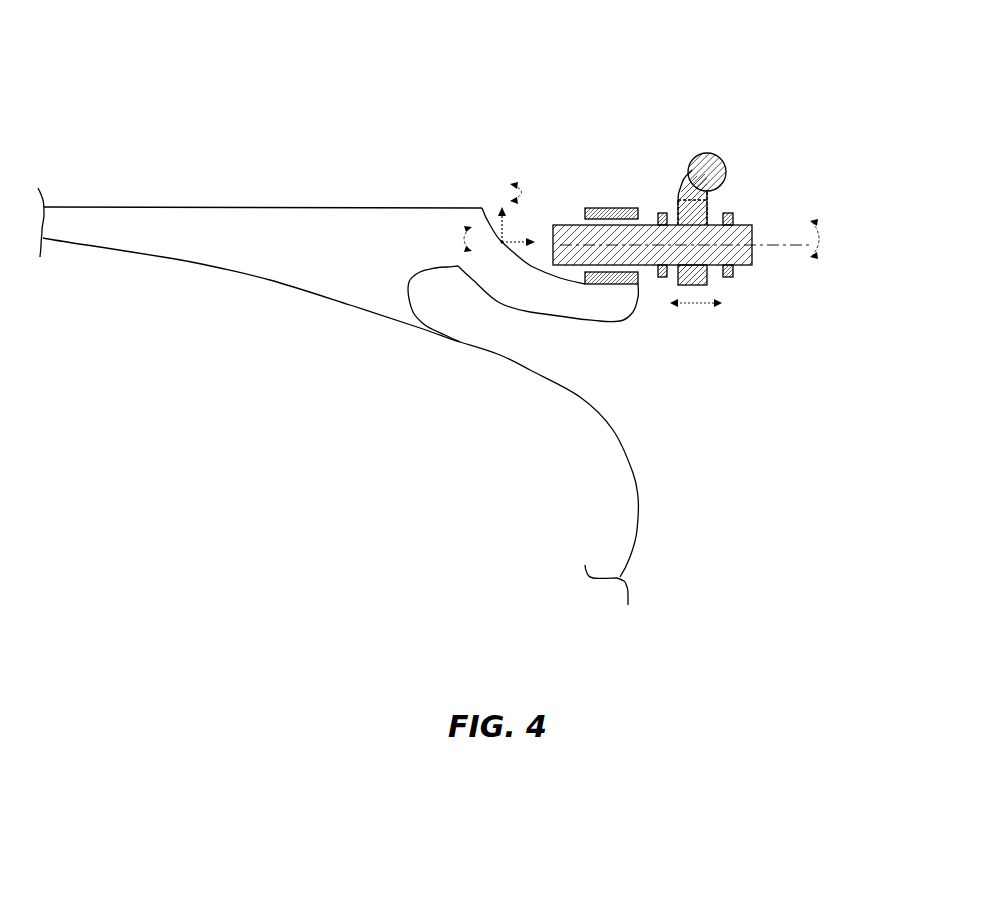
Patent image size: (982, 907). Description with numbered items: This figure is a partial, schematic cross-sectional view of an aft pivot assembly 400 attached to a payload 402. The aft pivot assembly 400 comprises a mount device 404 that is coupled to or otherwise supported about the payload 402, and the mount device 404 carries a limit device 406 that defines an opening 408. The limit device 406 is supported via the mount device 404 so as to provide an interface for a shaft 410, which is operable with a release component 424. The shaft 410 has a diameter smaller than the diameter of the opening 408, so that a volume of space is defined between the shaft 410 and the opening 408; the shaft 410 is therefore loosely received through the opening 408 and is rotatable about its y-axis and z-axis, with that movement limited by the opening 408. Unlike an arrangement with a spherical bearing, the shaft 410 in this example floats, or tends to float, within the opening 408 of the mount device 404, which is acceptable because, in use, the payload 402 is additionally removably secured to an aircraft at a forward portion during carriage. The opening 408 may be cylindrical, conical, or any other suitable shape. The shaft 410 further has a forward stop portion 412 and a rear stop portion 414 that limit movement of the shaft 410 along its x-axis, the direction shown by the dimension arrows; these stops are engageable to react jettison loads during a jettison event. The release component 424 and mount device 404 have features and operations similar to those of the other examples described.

The aft pivot assembly 400 is at (376, 55).
The payload 402 is at (638, 493).
The mount device 404 is at (298, 225).
The limit device 406 is at (600, 205).
The opening 408 is at (571, 217).
The shaft 410 is at (650, 214).
The forward stop portion 412 is at (663, 279).
The rear stop portion 414 is at (730, 282).
The release component 424 is at (736, 195).